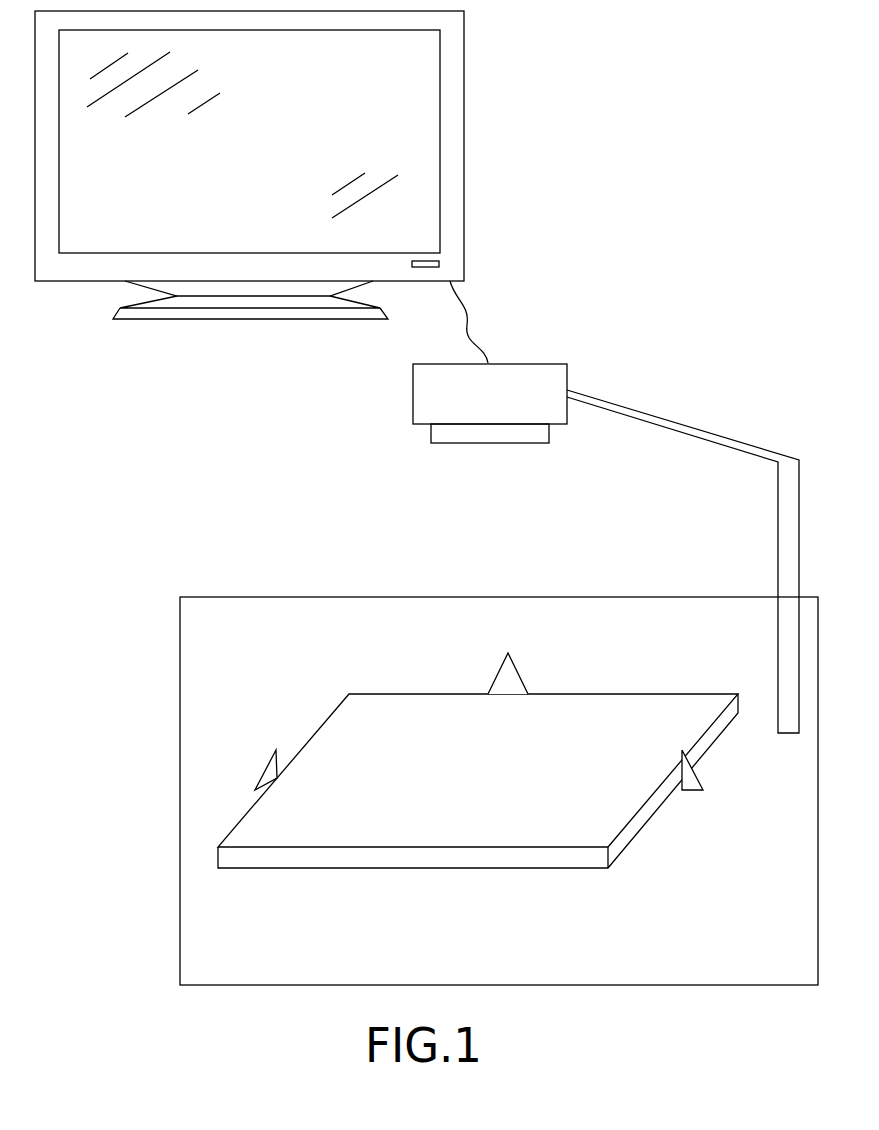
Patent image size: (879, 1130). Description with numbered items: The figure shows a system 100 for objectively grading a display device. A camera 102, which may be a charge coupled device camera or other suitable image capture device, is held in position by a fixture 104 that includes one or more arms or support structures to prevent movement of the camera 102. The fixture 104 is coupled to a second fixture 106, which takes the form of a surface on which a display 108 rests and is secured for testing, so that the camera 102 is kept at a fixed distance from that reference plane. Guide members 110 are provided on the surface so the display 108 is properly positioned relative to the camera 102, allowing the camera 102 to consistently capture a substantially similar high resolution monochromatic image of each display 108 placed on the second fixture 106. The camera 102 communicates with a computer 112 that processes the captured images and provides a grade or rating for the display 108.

The system 100 is at (698, 185).
The camera 102 is at (547, 363).
The fixture 104 is at (665, 415).
The second fixture 106 is at (545, 597).
The display 108 is at (597, 694).
The guide member 110 is at (686, 792).
The computer 112 is at (465, 163).